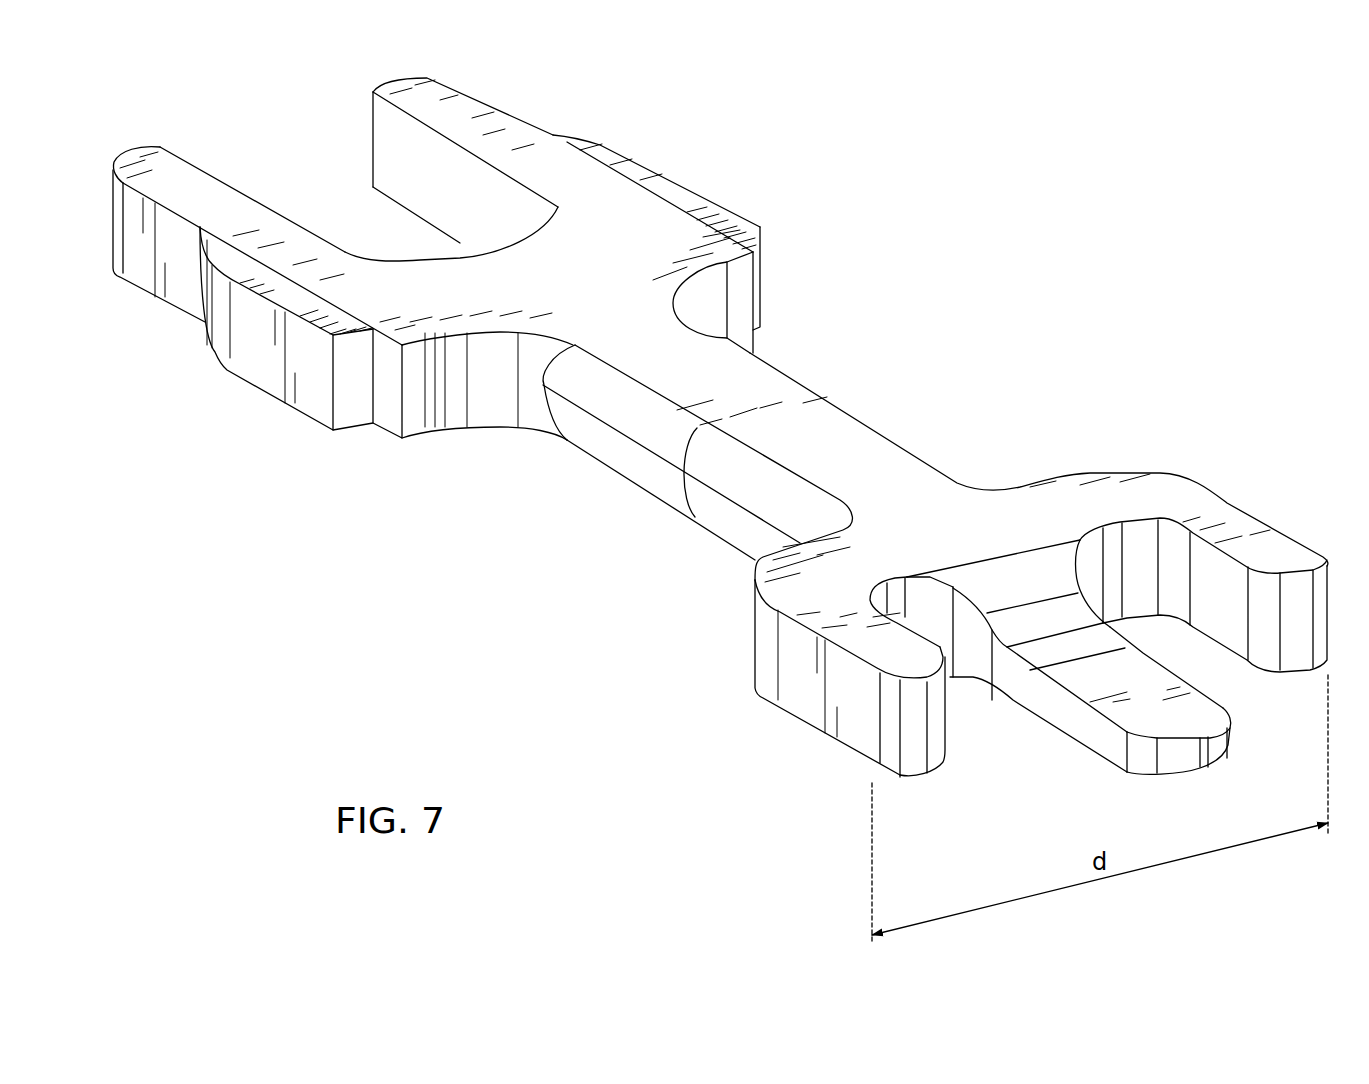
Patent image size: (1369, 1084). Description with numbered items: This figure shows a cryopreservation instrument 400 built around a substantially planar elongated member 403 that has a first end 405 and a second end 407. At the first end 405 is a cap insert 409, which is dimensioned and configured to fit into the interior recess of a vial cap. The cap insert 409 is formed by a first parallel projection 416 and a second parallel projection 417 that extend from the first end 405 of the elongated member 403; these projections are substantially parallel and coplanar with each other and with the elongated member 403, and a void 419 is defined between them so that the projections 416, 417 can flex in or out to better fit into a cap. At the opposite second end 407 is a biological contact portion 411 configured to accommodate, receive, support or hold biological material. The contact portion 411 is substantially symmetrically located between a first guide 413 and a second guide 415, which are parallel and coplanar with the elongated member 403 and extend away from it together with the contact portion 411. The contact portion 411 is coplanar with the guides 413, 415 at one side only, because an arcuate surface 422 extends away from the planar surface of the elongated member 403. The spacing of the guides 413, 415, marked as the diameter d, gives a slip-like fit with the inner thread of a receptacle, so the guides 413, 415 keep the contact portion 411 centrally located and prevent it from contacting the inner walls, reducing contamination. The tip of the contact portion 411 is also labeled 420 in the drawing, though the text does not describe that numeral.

The cryopreservation instrument 400 is at (818, 154).
The elongated member 403 is at (850, 410).
The first end 405 is at (406, 442).
The second end 407 is at (752, 688).
The cap insert 409 is at (283, 416).
The biological contact portion 411 is at (1200, 707).
The first guide 413 is at (907, 777).
The second guide 415 is at (1288, 680).
The first parallel projection 416 is at (130, 150).
The second parallel projection 417 is at (400, 82).
The void 419 is at (263, 118).
The end of ledge bar 420 is at (1185, 777).
The arcuate surface 422 is at (1035, 578).